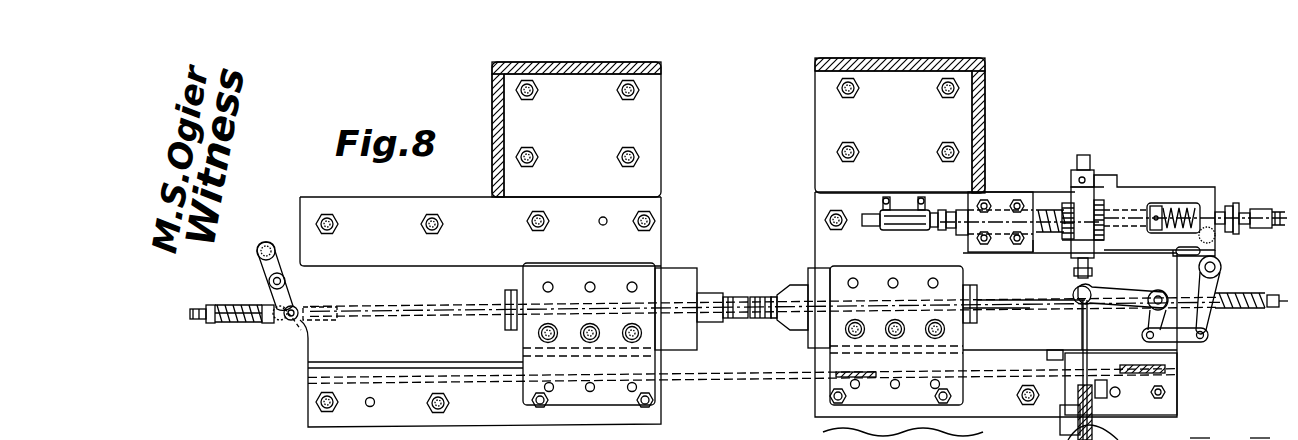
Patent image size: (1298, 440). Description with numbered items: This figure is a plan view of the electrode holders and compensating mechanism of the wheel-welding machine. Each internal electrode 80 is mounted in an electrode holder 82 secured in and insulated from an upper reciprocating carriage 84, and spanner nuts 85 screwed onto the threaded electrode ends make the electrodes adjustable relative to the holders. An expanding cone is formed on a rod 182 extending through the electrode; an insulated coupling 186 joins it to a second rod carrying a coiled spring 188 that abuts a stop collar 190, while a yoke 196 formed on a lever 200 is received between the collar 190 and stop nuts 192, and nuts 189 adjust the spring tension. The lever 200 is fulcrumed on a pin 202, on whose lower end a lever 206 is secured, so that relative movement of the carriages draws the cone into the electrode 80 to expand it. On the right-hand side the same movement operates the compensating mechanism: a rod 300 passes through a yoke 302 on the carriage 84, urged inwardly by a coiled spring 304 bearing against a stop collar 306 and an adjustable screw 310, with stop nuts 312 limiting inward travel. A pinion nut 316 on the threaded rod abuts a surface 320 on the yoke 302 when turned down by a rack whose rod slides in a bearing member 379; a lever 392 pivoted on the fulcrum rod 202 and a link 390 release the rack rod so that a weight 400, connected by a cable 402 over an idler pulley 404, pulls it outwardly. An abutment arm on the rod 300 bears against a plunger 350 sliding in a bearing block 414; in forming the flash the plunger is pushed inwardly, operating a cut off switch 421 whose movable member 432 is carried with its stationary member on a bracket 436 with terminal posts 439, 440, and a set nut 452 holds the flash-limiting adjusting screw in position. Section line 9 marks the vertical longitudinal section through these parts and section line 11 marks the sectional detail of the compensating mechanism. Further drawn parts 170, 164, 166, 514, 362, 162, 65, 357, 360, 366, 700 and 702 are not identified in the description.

The rod 182 is at (393, 306).
The upper reciprocating carriage 84 is at (445, 348).
The spanner nut 85 is at (505, 330).
The section line 9— 9 is at (498, 324).
The electrode holder 82 is at (675, 278).
The internal electrode 80 is at (775, 297).
The coupling sleeve 170 is at (785, 330).
The lever 206 is at (250, 264).
The lever 200 is at (262, 265).
The pin 202 is at (285, 281).
The stop collar 190 is at (262, 306).
The adjusting nut 164 is at (188, 314).
The nut 189 is at (205, 315).
The rod 166 is at (230, 322).
The yoke 196 is at (275, 322).
The stop nut 192 is at (291, 322).
The insulated coupling 186 is at (322, 323).
The section line 11— 11 is at (793, 230).
The bracket 436 is at (891, 208).
The terminal post 439 is at (882, 208).
The terminal post 440 is at (921, 197).
The cut off switch 421 is at (870, 228).
The set nut 452 is at (938, 230).
The movable member 432 is at (885, 235).
The bearing block 414 is at (1000, 185).
The spring 514 is at (1055, 210).
The plunger 350 is at (1034, 247).
The bracket 362 is at (985, 300).
The rod 162 is at (997, 298).
The shaft 65 is at (975, 312).
The rod 357 is at (1080, 318).
The pinion nut 316 is at (1086, 160).
The bearing member 379 is at (1094, 240).
The surface 320 is at (1100, 200).
The rack guide 360 is at (1094, 255).
The rod 300 is at (1145, 195).
The stop collar 306 is at (1205, 185).
The yoke 302 is at (1153, 205).
The coiled spring 304 is at (1185, 205).
The adjustable screw 310 is at (1230, 205).
The stop nut 312 is at (1242, 230).
The vertical rod 366 is at (1088, 312).
The coiled spring 188 is at (1238, 270).
The link 390 is at (1178, 346).
The lever 392 is at (1210, 334).
The cable 402 is at (1090, 385).
The idler pulley 404 is at (1062, 412).
The weight 400 is at (1100, 436).
The part 700 is at (1201, 432).
The part 702 is at (1263, 432).